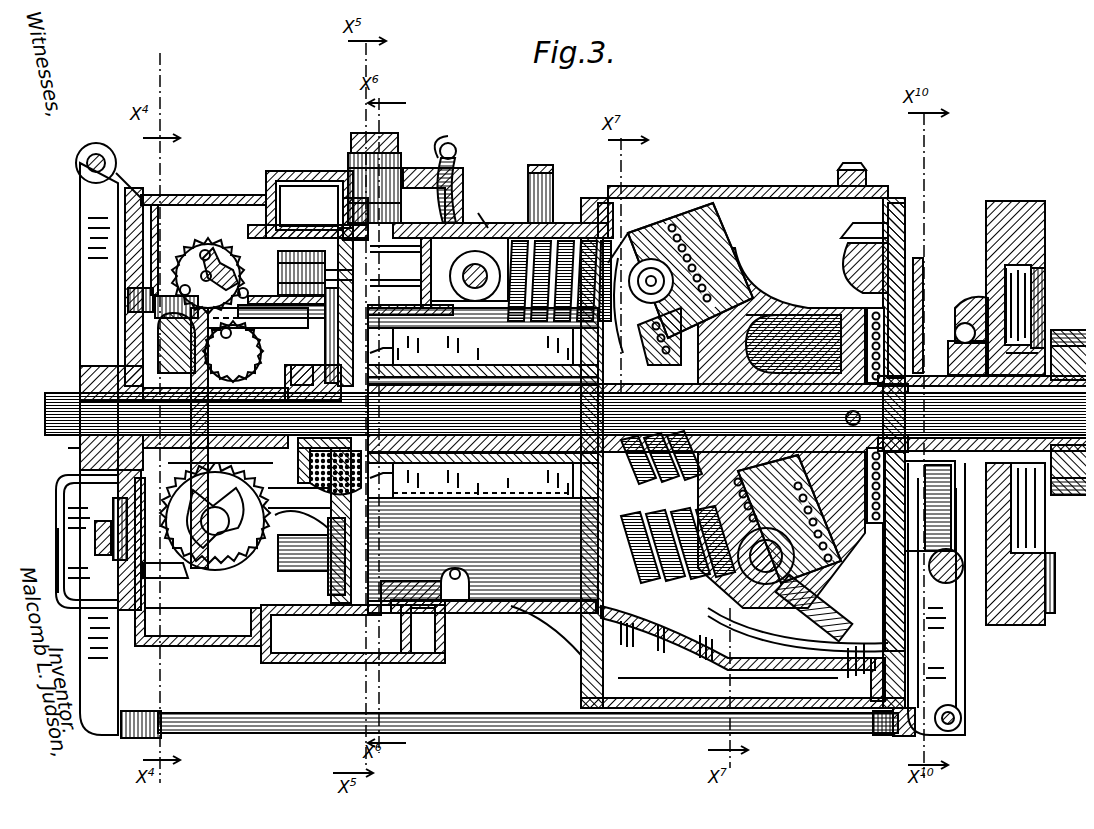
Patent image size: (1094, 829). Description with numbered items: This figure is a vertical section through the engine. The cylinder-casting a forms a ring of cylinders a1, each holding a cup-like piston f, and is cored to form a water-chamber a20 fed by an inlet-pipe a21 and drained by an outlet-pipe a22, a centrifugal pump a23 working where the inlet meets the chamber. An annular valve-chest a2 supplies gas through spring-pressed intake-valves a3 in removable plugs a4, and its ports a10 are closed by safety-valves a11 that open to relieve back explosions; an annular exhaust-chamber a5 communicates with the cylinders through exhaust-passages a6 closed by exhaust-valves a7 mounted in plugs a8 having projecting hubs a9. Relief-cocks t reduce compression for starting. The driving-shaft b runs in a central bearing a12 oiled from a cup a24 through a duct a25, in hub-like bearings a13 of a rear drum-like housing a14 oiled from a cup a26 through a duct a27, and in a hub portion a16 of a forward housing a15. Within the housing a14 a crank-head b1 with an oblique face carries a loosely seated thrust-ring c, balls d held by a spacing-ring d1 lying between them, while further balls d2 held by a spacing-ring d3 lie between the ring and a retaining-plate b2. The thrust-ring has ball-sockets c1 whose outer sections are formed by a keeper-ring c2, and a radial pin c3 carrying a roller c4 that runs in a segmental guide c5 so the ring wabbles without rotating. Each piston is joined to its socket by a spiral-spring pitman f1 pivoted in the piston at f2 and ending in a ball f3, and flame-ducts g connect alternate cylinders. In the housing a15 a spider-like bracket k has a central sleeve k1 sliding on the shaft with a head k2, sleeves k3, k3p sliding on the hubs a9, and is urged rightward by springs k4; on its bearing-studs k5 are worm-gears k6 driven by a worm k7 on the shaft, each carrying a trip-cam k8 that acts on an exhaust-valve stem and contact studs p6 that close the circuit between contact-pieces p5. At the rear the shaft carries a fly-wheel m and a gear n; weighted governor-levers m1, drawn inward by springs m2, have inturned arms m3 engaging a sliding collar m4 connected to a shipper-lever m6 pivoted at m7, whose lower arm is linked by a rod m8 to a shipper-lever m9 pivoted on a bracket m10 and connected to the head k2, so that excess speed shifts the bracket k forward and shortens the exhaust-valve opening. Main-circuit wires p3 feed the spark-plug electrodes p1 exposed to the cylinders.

The shipper-lever m9 is at (74, 245).
The bracket m10 is at (90, 145).
The spider-like bracket k is at (117, 349).
The head k2 is at (72, 387).
The hub portion a16 is at (68, 440).
The springs k4 is at (92, 512).
The worm-gears k6 is at (105, 590).
The worm k7 is at (218, 494).
The sleeve k3 is at (212, 260).
The bearing-studs k5 is at (172, 552).
The contact-pieces p5 is at (205, 250).
The contact studs p6 is at (196, 243).
The trip-cam k8 is at (218, 558).
The removable plugs a8 is at (305, 440).
The projecting hubs a9 is at (270, 550).
The gear hub k3p is at (300, 560).
The water inlet-pipe a21 is at (274, 354).
The centrifugal pump a23 is at (303, 473).
The annular exhaust-chamber a5 is at (272, 168).
The exhaust-valves a7 is at (309, 206).
The housing a15 is at (207, 644).
The exhaust-passages a6 is at (384, 450).
The relief-cocks t is at (440, 612).
The annular gas-supply chamber a2 is at (413, 178).
The removable radially-seated plugs a4 is at (372, 150).
The intake-valves a3 is at (455, 198).
The ports a10 is at (455, 195).
The safety-valves a11 is at (472, 215).
The cylinder-casting a is at (491, 208).
The water outlet-pipe a22 is at (535, 170).
The cylinders a1 is at (548, 228).
The drum-like housing a14 is at (819, 174).
The water-chamber a20 is at (586, 458).
The oil cup a24 is at (535, 355).
The shaft-bearing a12 is at (483, 480).
The oil-distributing duct a25 is at (498, 479).
The flame-ducts g is at (389, 414).
The piston f is at (413, 240).
The pivotal connection f2 is at (442, 270).
The central sleeve k1 is at (565, 418).
The driving-shaft b is at (605, 378).
The retaining-plate b2 is at (705, 472).
The thrust-ring c is at (665, 220).
The crank-head b1 is at (750, 282).
The balls d is at (722, 250).
The balls f3 is at (700, 238).
The spacing-ring d1 is at (680, 215).
The spiral springs f1 is at (640, 228).
The ball-sockets c1 is at (670, 175).
The bearing-balls d2 is at (665, 580).
The spacing-ring d3 is at (705, 578).
The keeper-ring c2 is at (795, 584).
The segmental guide c5 is at (660, 662).
The roller c4 is at (728, 681).
The stud c3 is at (845, 672).
The oil cup a26 is at (895, 240).
The oil-duct a27 is at (905, 262).
The hub-like bearings a13 is at (920, 360).
The fly-wheel m is at (1007, 205).
The sliding collar m4 is at (1035, 285).
The governor-levers m1 is at (1030, 320).
The springs m2 is at (1048, 345).
The gear n is at (1068, 487).
The pivot m7 is at (1020, 578).
The inturned arms m3 is at (931, 551).
The electrodes p1 is at (956, 562).
The main-circuit wires p3 is at (956, 622).
The shipper-lever m6 is at (950, 686).
The rod m8 is at (268, 724).